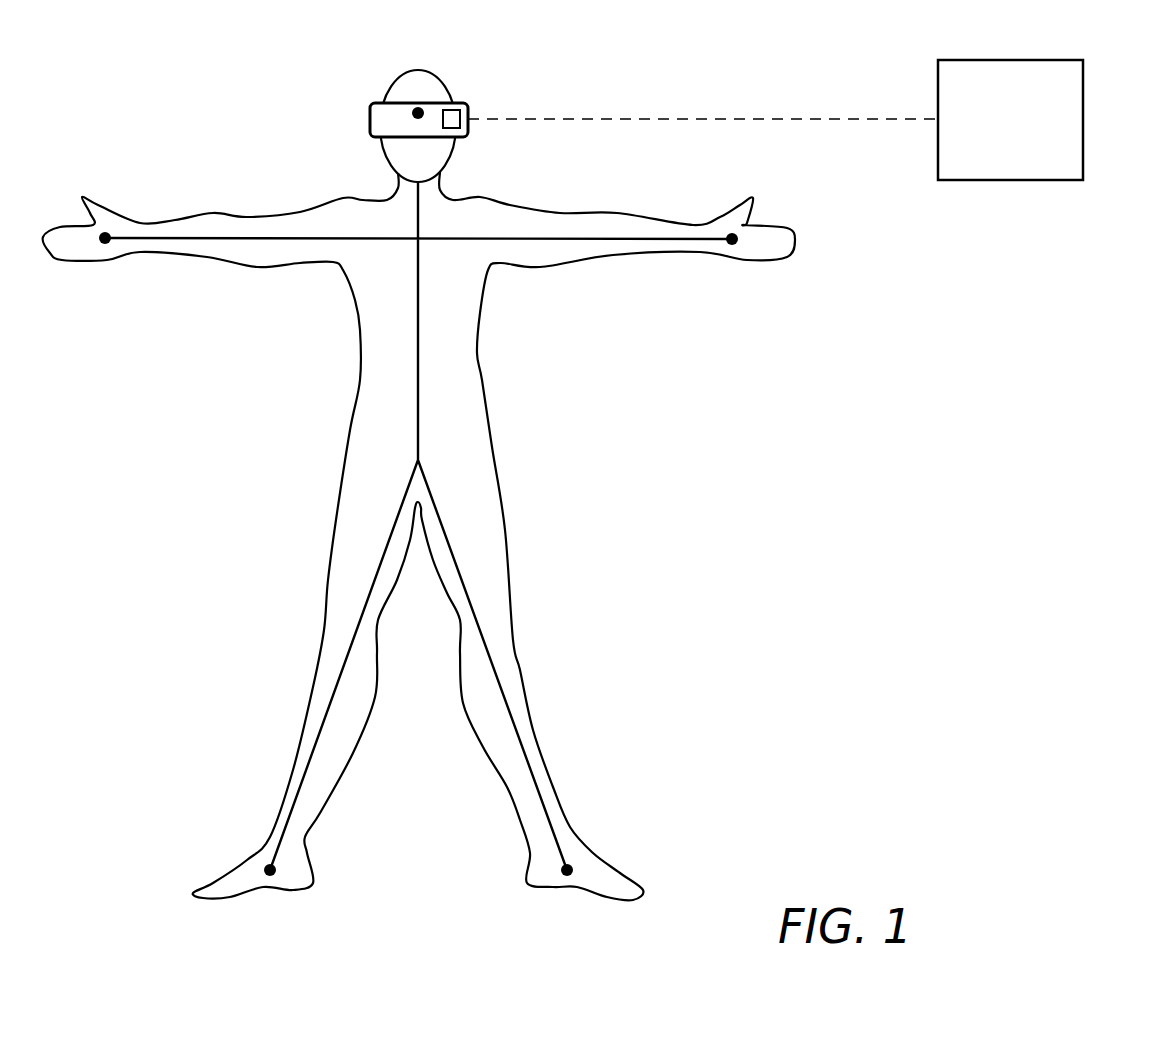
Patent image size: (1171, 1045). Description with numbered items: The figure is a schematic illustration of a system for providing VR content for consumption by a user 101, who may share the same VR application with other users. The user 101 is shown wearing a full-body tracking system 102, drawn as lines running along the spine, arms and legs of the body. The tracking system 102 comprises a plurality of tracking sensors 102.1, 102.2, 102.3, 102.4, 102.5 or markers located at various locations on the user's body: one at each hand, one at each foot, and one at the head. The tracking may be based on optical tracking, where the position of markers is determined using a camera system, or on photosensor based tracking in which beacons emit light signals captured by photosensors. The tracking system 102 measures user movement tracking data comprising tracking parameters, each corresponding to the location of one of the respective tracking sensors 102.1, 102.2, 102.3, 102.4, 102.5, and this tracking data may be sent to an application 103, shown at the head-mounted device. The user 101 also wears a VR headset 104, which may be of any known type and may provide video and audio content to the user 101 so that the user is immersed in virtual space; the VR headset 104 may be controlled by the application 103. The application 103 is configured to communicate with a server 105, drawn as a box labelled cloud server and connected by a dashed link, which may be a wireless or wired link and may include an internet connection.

The user 101 is at (180, 460).
The full-body tracking system 102 is at (418, 358).
The tracking sensor 102.1 is at (732, 245).
The tracking sensor 102.2 is at (105, 244).
The tracking sensor 102.3 is at (567, 876).
The tracking sensor 102.4 is at (270, 876).
The tracking sensor 102.5 is at (420, 106).
The application 103 is at (459, 106).
The VR headset 104 is at (370, 121).
The server 105 is at (1084, 70).